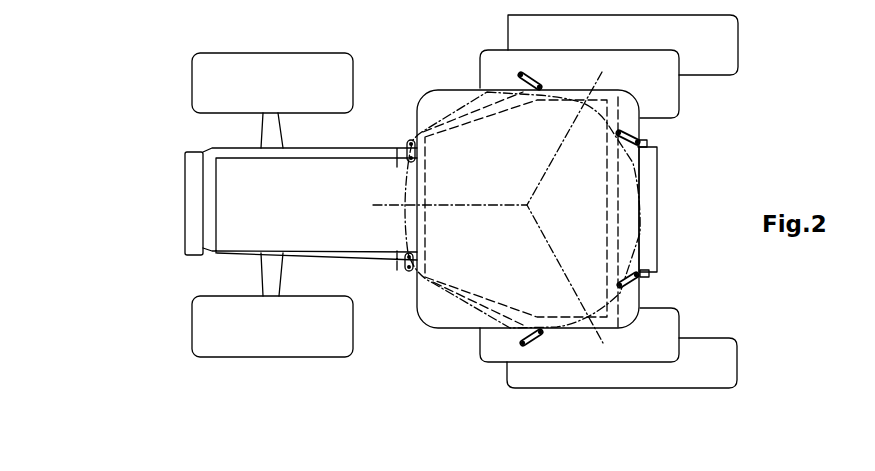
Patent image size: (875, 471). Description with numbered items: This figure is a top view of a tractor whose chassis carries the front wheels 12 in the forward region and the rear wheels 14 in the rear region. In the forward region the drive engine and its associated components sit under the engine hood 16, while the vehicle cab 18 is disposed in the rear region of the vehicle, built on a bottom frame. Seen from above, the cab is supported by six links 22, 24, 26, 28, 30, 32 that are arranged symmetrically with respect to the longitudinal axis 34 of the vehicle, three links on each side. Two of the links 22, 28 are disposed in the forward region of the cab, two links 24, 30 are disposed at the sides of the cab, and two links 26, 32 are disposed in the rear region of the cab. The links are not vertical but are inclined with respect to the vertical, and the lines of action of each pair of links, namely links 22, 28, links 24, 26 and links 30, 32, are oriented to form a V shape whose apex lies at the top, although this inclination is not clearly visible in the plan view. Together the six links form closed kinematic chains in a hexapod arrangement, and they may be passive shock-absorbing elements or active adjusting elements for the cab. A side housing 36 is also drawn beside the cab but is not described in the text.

The front wheels 12 is at (196, 76).
The rear wheels 14 is at (738, 52).
The engine hood 16 is at (222, 197).
The vehicle cab 18 is at (630, 297).
The link 22 is at (405, 266).
The link 24 is at (540, 333).
The link 26 is at (648, 250).
The link 28 is at (406, 148).
The link 30 is at (528, 73).
The link 32 is at (645, 132).
The longitudinal axis 34 is at (377, 207).
The housing / side box 36 is at (642, 170).